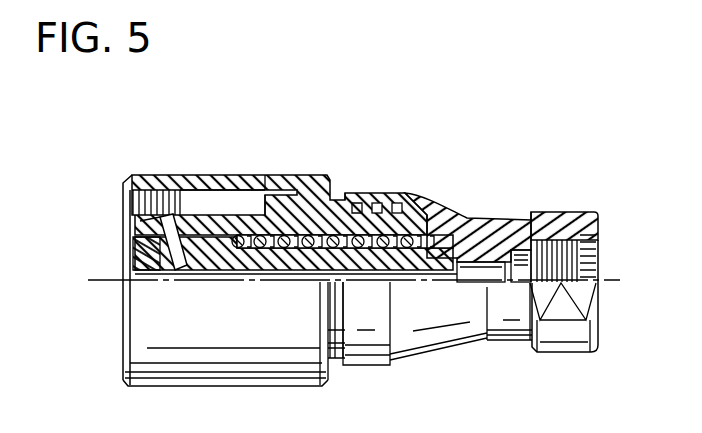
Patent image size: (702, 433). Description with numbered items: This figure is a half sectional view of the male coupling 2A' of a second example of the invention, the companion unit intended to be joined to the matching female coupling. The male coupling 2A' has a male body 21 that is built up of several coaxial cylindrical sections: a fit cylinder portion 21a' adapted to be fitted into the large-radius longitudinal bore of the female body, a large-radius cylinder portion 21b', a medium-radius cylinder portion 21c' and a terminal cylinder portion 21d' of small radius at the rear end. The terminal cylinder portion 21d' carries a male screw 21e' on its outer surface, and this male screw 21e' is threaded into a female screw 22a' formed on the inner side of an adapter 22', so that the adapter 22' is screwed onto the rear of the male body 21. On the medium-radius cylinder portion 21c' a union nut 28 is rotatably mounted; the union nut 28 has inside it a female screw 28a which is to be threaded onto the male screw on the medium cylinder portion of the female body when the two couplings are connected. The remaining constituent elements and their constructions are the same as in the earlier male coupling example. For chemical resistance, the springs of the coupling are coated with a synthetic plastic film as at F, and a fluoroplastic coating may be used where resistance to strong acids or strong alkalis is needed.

The male coupling 2A' is at (354, 164).
The male body 21 is at (285, 217).
The fit cylinder portion 21a' is at (210, 157).
The large-radius cylinder portion 21b' is at (237, 144).
The medium-radius cylinder portion 21c' is at (351, 170).
The terminal cylinder portion 21d' is at (442, 173).
The male screw 21e' is at (401, 176).
The adapter 22' is at (463, 259).
The female screw 22a' is at (385, 331).
The union nut 28 is at (143, 175).
The female screw 28a is at (132, 213).
The synthetic plastic film F is at (258, 224).